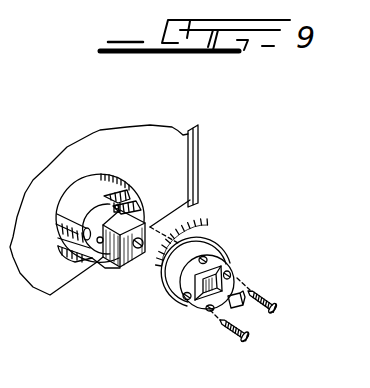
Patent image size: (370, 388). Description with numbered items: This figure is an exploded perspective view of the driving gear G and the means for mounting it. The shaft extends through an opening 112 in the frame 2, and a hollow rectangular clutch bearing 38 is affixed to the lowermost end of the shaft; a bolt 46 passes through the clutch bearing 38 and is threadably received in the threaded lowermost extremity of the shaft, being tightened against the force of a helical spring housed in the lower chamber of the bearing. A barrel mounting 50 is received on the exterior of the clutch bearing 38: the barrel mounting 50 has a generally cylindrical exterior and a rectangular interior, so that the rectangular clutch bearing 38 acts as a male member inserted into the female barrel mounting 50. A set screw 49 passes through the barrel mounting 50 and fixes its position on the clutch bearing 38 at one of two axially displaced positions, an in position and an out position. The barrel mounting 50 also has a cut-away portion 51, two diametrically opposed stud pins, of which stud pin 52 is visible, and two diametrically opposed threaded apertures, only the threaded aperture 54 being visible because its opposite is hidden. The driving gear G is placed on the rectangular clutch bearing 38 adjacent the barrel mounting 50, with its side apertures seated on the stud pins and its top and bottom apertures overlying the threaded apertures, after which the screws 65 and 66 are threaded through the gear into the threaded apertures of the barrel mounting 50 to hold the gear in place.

The frame 2 is at (173, 170).
The clutch bearing 38 is at (150, 227).
The bolt 46 is at (142, 258).
The set screw 49 is at (60, 241).
The barrel mounting 50 is at (82, 190).
The cut-away portion 51 is at (130, 200).
The stud pin 52 is at (108, 211).
The threaded aperture 54 is at (97, 262).
The screw 65 is at (254, 343).
The screw 66 is at (281, 307).
The opening 112 is at (113, 186).
The driving gear G is at (219, 251).